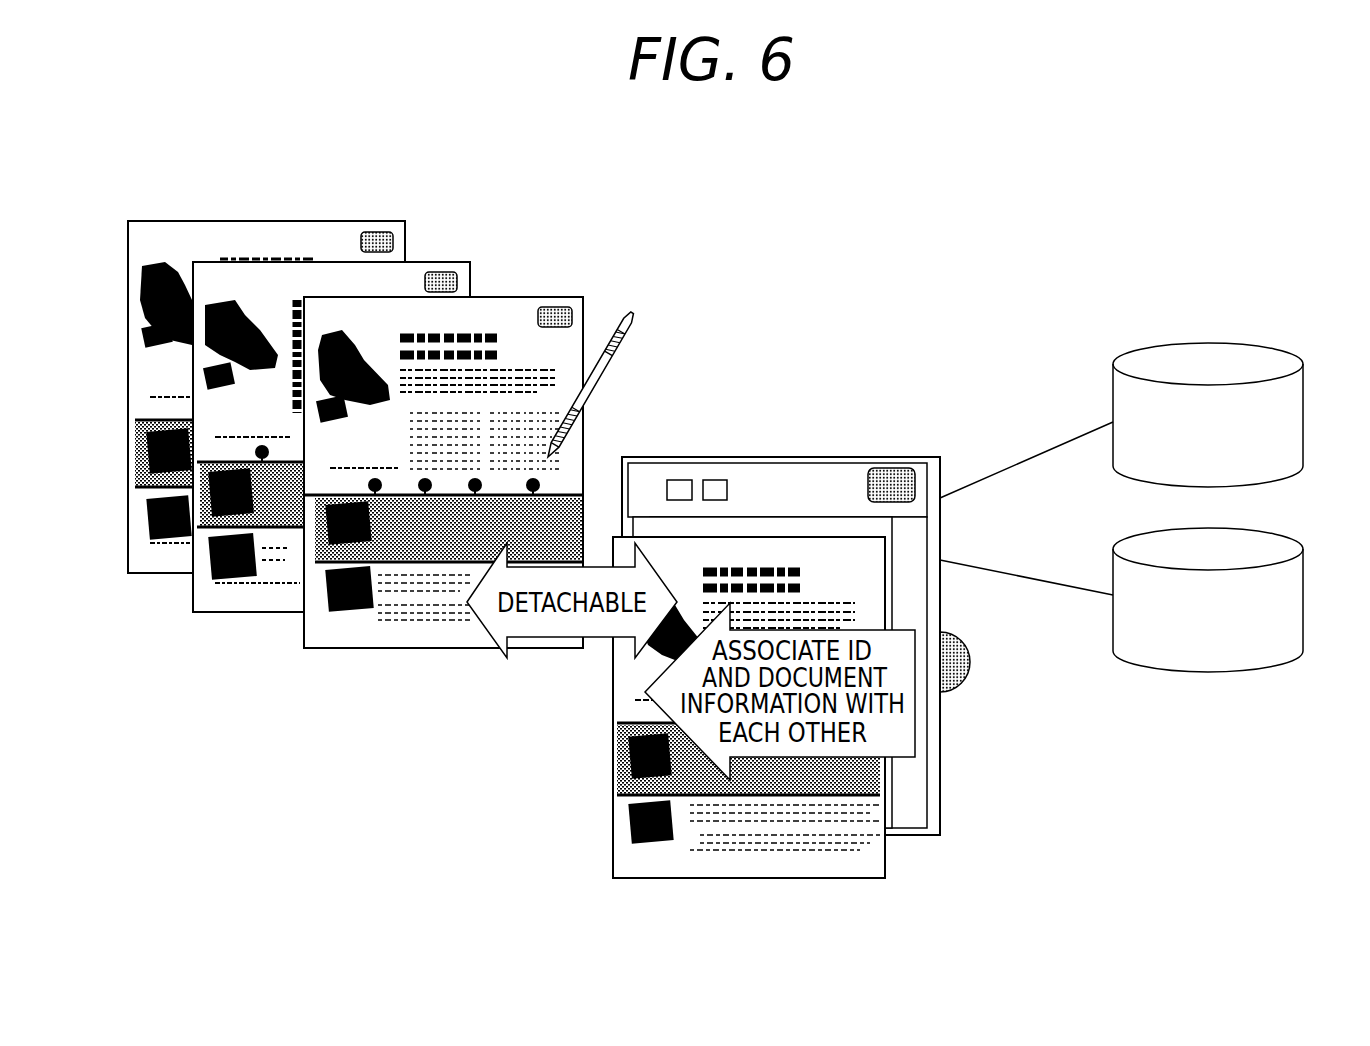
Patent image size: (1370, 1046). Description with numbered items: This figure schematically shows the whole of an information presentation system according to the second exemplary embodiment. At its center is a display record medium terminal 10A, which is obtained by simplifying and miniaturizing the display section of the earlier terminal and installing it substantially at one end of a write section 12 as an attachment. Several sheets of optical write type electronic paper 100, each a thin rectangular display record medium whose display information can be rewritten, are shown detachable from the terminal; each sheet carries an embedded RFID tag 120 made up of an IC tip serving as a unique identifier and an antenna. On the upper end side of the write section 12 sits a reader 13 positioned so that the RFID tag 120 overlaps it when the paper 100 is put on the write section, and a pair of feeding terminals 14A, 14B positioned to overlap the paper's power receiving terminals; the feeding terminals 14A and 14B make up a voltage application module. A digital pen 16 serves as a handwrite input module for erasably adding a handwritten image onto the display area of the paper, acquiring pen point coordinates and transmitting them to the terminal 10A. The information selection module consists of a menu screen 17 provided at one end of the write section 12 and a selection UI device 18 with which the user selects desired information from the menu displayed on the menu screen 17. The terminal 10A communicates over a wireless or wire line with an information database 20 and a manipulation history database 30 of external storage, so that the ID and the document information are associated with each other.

The optical write type electronic paper 100 is at (215, 209).
The RFID tag 120 is at (380, 232).
The digital pen 16 is at (612, 360).
The display record medium terminal 10A is at (823, 628).
The write section 12 is at (808, 477).
The reader 13 is at (897, 468).
The feeding terminal 14A is at (677, 480).
The feeding terminal 14B is at (717, 480).
The menu screen 17 is at (920, 597).
The selection UI device 18 is at (962, 665).
The information database 20 is at (1303, 395).
The manipulation history database 30 is at (1303, 610).